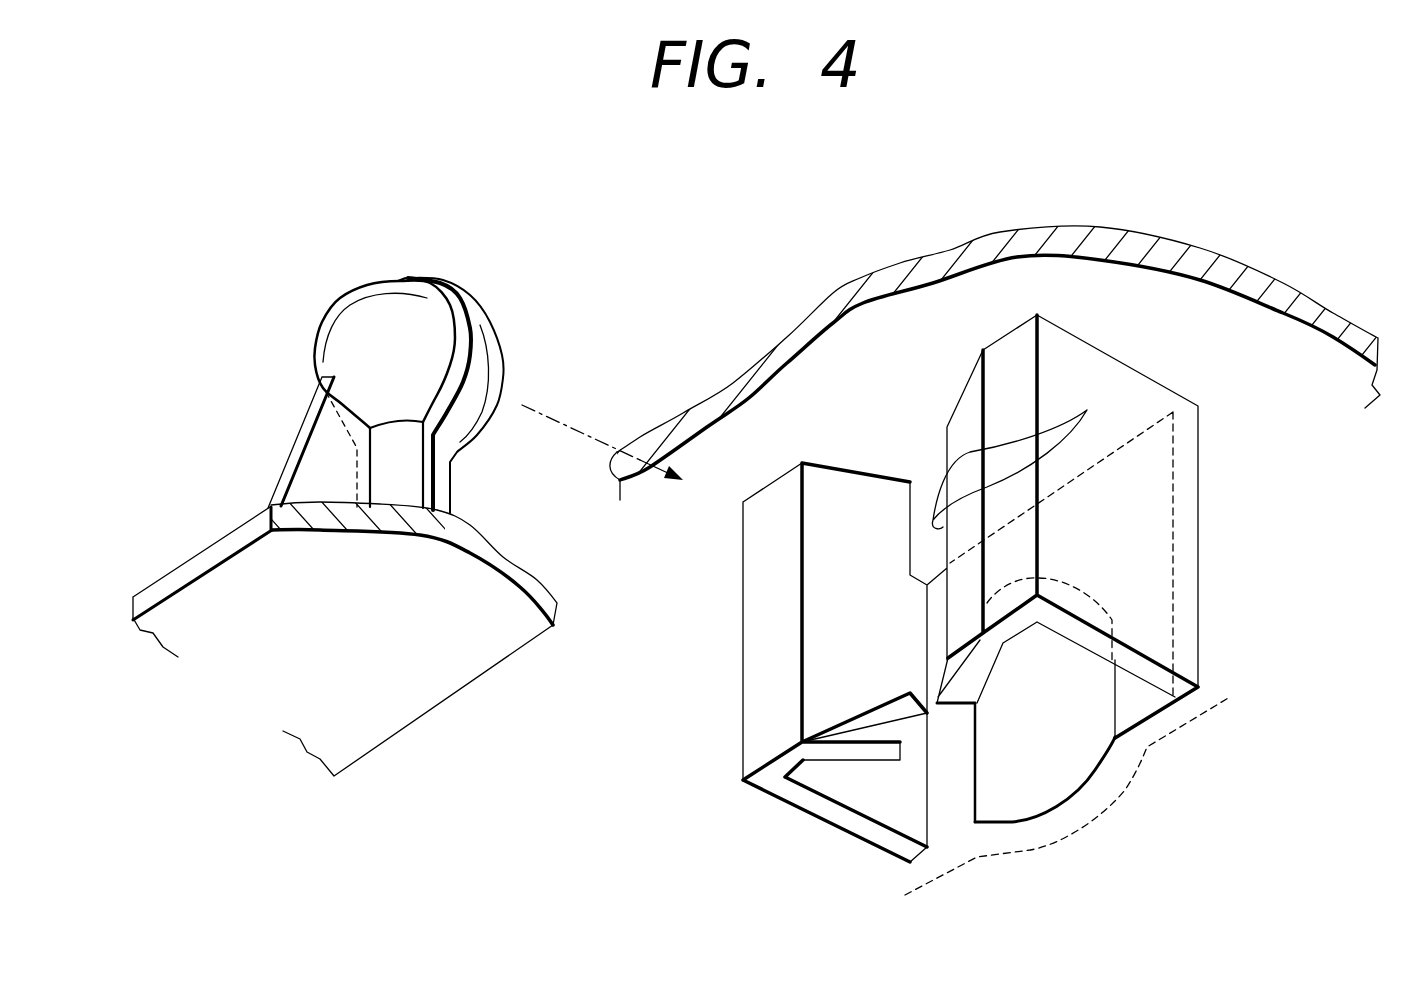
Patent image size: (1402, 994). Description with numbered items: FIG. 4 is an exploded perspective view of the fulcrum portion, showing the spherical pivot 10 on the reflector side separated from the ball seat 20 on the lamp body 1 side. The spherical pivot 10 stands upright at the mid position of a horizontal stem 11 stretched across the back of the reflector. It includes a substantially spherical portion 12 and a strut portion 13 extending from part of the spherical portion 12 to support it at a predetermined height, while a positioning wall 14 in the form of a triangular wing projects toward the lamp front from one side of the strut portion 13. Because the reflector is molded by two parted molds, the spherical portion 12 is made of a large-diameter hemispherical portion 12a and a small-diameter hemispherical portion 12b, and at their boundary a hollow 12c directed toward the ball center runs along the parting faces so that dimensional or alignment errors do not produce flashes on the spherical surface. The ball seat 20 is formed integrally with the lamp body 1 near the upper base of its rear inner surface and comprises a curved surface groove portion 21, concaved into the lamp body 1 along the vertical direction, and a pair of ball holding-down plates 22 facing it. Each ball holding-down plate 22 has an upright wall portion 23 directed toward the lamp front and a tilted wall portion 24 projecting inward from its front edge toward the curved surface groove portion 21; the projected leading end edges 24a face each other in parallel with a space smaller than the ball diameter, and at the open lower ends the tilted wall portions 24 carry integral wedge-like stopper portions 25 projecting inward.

The lamp body 1 is at (1315, 303).
The spherical pivot 10 is at (435, 265).
The horizontal stem 11 is at (405, 703).
The spherical portion 12 is at (482, 303).
The large-diameter hemispherical portion 12a is at (487, 372).
The small-diameter hemispherical portion 12b is at (343, 335).
The hollow 12c is at (422, 279).
The strut portion 13 is at (442, 493).
The positioning wall 14 is at (300, 475).
The ball seat 20 is at (1106, 323).
The curved surface groove portion 21 is at (1070, 778).
The ball holding-down plate 22 is at (763, 808).
The upright wall portion 23 is at (868, 807).
The tilted wall portion 24 is at (960, 422).
The projected leading end edge 24a is at (1028, 453).
The wedge-like stopper portion 25 is at (948, 697).